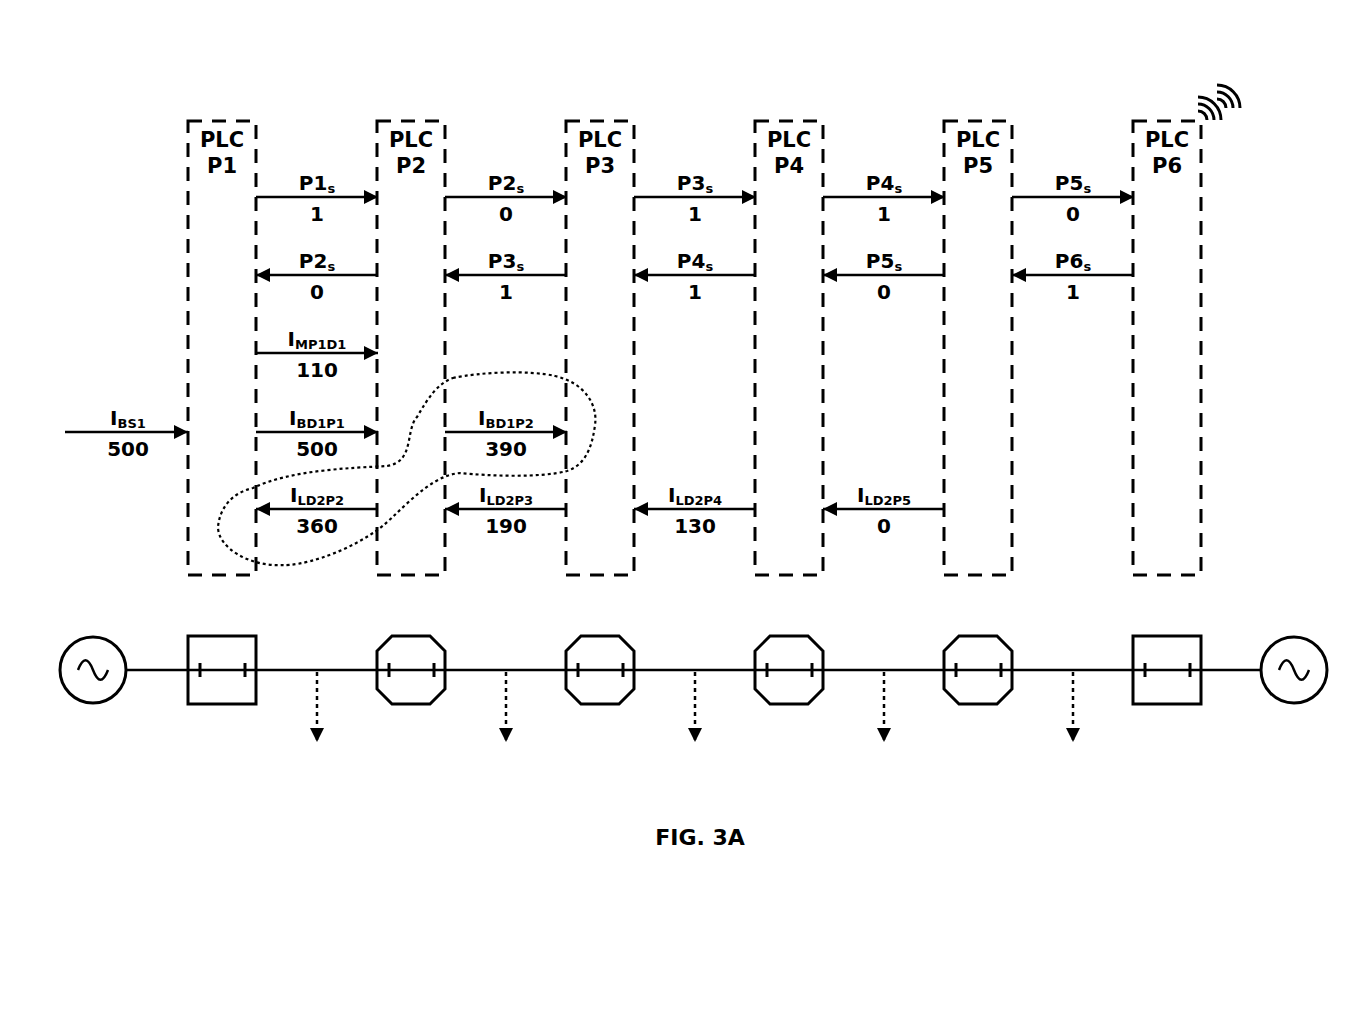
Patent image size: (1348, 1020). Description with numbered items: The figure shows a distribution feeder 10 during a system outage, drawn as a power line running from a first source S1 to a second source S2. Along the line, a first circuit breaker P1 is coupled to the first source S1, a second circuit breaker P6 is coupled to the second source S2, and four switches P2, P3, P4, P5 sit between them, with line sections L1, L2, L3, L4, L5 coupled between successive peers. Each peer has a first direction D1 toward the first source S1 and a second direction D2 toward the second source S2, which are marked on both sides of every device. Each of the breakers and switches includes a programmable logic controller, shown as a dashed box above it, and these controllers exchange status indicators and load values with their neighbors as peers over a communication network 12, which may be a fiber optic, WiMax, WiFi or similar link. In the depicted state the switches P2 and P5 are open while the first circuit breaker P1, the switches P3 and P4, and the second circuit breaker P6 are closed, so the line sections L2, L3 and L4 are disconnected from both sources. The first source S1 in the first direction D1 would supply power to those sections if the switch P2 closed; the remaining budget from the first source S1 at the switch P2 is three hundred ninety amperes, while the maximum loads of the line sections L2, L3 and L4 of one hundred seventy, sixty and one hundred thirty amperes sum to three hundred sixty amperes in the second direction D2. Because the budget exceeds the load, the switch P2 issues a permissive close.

The communication network 12 is at (746, 102).
The distribution feeder 10 is at (1312, 167).
The first source S1 is at (93, 688).
The second source S2 is at (1294, 688).
The first circuit breaker P1 is at (222, 688).
The switch P2 is at (411, 688).
The switch P3 is at (600, 688).
The switch P4 is at (789, 688).
The switch P5 is at (978, 688).
The second circuit breaker P6 is at (1167, 688).
The line section L1 is at (316, 691).
The line section L2 is at (506, 691).
The line section L3 is at (695, 691).
The line section L4 is at (884, 691).
The line section L5 is at (1072, 691).
The first direction D1 is at (638, 654).
The second direction D2 is at (749, 654).